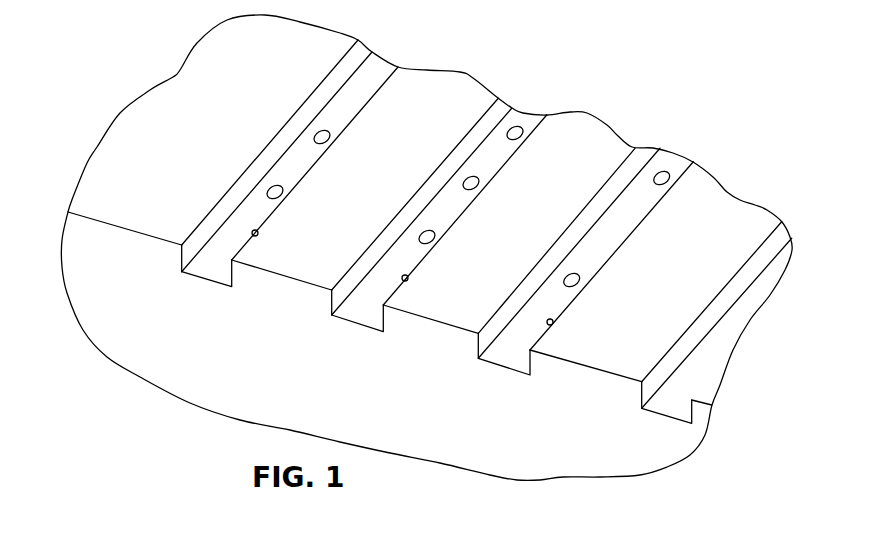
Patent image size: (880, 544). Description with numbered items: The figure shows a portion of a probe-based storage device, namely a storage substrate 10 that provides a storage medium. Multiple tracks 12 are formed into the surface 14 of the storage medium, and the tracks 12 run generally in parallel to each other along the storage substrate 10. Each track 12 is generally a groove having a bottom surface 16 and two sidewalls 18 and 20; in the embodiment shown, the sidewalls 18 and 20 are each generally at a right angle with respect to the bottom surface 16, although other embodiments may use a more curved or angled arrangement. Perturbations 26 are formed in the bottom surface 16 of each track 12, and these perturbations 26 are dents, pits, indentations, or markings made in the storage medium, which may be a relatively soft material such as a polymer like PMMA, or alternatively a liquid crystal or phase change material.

The storage substrate 10 is at (422, 248).
The track 12 is at (469, 247).
The surface 14 is at (422, 228).
The bottom surface 16 is at (437, 334).
The sidewall 18 is at (469, 224).
The sidewall 20 is at (429, 289).
The perturbations 26 is at (492, 219).